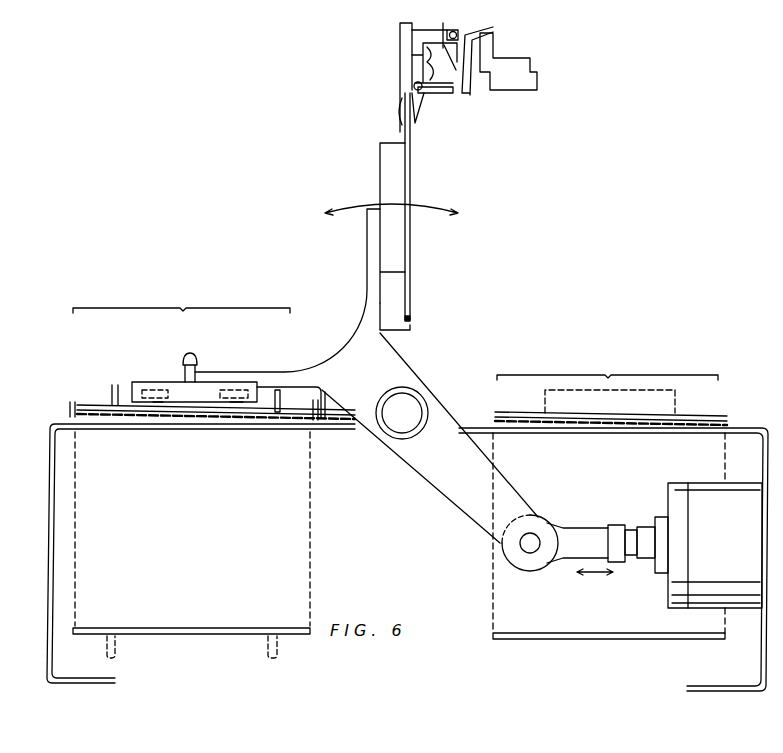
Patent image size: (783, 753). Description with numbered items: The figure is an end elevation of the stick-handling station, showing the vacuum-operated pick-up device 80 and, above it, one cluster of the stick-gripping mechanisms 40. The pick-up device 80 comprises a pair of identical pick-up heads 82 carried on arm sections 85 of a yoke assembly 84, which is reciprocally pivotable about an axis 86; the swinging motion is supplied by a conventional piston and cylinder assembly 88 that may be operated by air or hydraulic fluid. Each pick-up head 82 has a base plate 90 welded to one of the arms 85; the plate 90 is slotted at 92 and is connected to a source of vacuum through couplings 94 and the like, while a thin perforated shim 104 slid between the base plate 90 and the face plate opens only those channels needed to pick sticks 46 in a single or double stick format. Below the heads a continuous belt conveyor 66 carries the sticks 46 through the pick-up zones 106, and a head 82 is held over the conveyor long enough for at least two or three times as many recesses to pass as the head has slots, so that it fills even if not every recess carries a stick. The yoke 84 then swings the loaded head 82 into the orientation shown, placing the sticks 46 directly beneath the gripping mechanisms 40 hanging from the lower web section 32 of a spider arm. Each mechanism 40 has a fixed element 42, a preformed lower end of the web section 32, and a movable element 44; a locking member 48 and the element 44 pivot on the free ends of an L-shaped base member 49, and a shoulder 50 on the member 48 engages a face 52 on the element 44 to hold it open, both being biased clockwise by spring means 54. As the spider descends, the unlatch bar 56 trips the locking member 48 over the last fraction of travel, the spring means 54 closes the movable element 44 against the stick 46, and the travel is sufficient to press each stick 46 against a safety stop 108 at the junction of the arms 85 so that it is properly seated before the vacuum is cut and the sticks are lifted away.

The lower web section 32 is at (400, 31).
The stick-gripping mechanism 40 is at (463, 113).
The fixed element 42 is at (400, 120).
The movable element 44 is at (417, 118).
The stick 46 is at (410, 169).
The locking member 48 is at (468, 77).
The L-shaped base member 49 is at (415, 62).
The shoulder 50 is at (442, 62).
The face 52 is at (452, 93).
The spring means 54 is at (446, 25).
The unlatch bar 56 is at (505, 61).
The belt conveyor 66 is at (312, 471).
The vacuum-operated pick-up device 80 is at (291, 357).
The pick-up head 82 is at (376, 186).
The yoke assembly 84 is at (430, 438).
The arm section 85 is at (370, 240).
The axis 86 is at (404, 424).
The piston and cylinder assembly 88 is at (640, 498).
The base plate 90 is at (403, 237).
The slot 92 is at (226, 394).
The coupling 94 is at (192, 353).
The perforated shim 104 is at (245, 402).
The pick-up zone 106 is at (395, 334).
The safety stop 108 is at (410, 330).